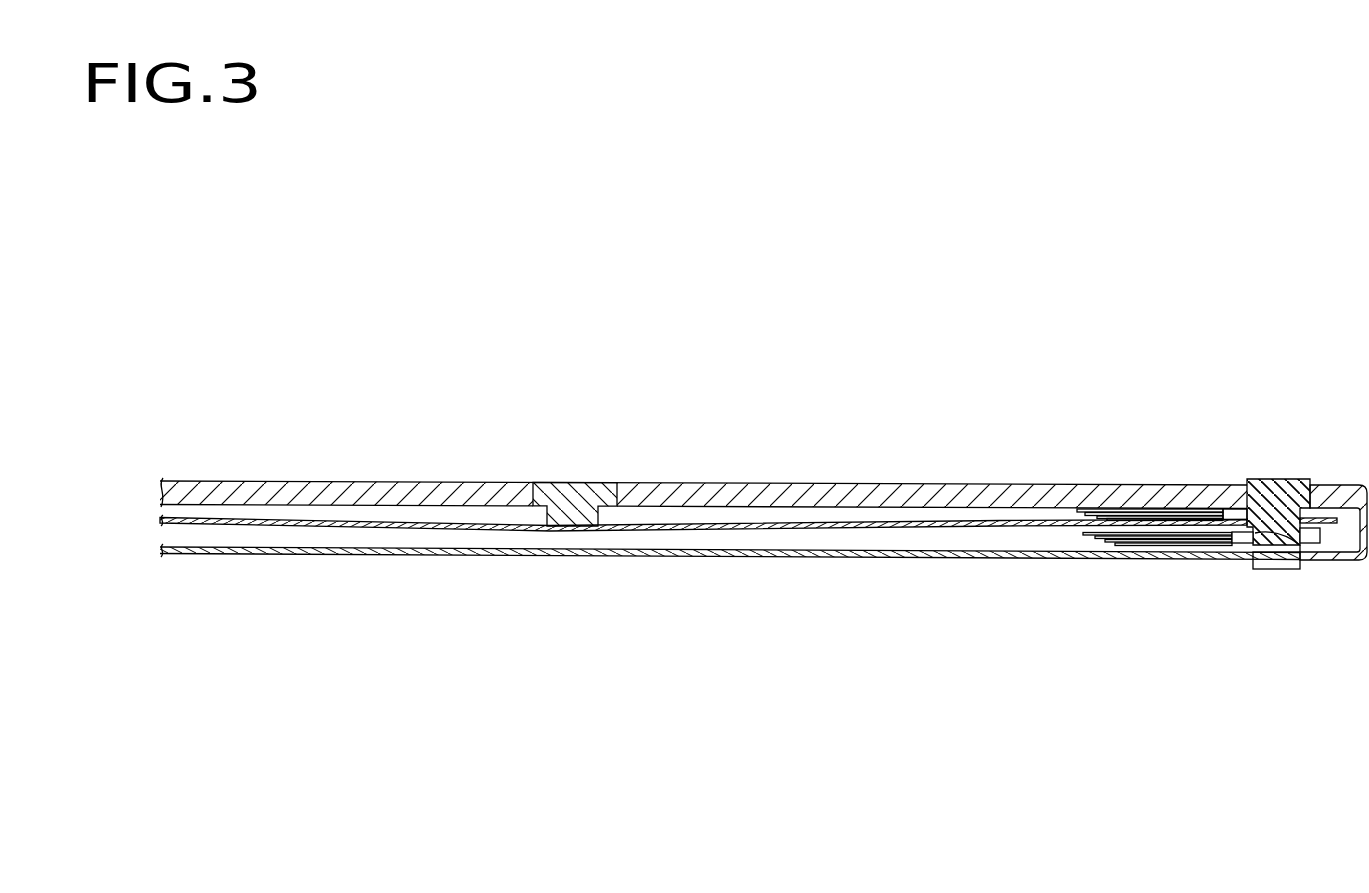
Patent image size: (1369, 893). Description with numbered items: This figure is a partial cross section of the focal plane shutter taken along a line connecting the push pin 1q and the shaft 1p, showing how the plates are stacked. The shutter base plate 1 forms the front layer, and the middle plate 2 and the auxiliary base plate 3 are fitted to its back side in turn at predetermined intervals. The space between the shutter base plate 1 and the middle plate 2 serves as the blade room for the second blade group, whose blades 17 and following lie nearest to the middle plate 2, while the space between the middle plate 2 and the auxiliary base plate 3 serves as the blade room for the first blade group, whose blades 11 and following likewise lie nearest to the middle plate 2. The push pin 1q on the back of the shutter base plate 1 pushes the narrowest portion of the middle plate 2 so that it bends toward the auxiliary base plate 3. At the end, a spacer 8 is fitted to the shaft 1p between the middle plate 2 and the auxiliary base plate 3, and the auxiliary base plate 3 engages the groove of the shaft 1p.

The shutter base plate 1 is at (403, 493).
The push pin 1q is at (547, 521).
The shaft 1p is at (1277, 546).
The middle plate 2 is at (320, 523).
The auxiliary base plate 3 is at (422, 553).
The spacer 8 is at (1316, 535).
The blade 11 is at (1062, 542).
The blade 17 is at (1053, 515).